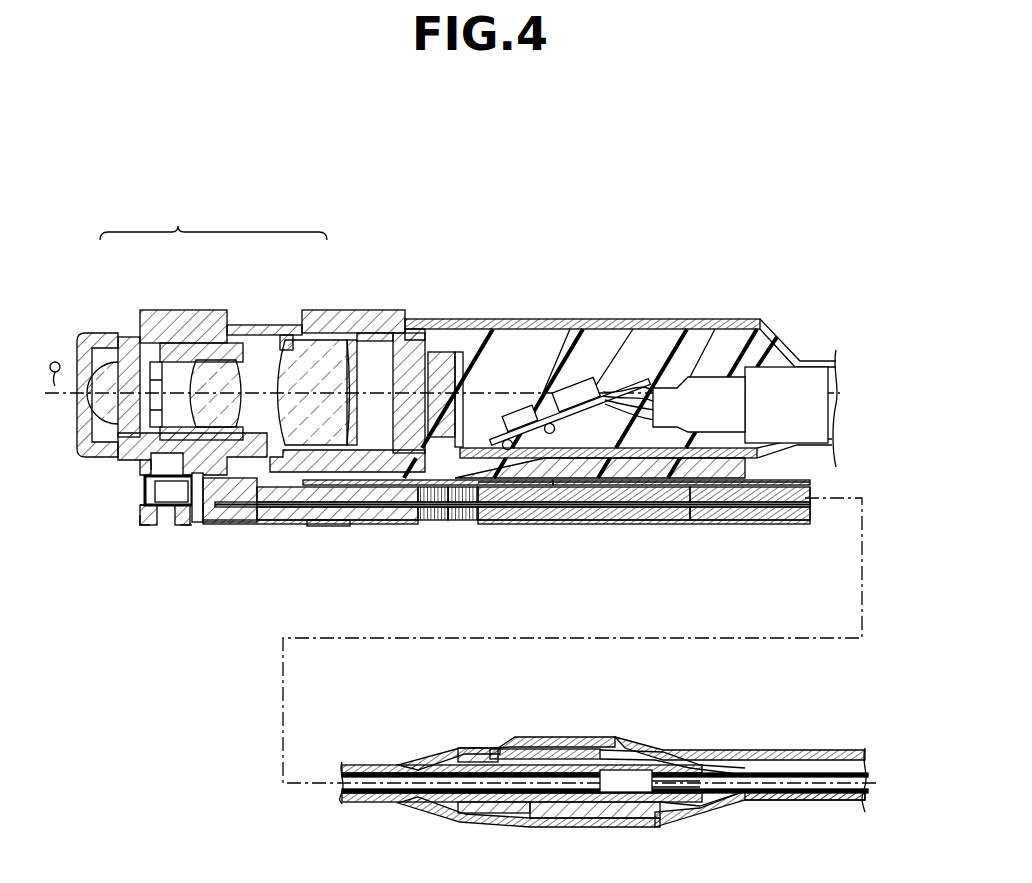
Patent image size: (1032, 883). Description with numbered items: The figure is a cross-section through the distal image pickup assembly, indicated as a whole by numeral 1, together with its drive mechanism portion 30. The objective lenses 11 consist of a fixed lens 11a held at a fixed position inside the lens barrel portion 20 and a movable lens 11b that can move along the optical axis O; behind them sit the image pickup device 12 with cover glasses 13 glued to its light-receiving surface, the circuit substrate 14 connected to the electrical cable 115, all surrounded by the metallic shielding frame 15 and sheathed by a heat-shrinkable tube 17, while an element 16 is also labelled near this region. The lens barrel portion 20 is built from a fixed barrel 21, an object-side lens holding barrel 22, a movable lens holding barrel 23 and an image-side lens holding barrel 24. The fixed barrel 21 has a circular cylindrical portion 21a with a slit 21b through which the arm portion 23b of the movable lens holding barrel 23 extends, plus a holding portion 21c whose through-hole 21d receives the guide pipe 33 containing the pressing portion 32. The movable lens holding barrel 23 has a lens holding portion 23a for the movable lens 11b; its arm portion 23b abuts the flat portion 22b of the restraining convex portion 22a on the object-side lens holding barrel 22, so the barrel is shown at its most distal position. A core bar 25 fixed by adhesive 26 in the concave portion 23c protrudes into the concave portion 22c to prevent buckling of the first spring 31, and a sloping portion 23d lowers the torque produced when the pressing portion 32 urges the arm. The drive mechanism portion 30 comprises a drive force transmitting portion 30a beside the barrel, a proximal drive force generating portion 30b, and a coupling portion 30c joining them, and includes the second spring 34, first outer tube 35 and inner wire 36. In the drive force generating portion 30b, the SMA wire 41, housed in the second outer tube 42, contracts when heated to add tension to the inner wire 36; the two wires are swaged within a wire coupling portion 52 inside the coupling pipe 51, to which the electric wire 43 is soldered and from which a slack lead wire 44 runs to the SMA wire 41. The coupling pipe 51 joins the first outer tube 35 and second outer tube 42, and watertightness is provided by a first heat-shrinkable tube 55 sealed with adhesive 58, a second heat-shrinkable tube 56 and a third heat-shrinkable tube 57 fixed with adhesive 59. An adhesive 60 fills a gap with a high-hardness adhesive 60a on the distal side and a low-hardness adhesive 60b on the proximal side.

The endoscope distal end portion 1 is at (268, 210).
The objective lenses 11 is at (213, 217).
The fixed lens 11a is at (130, 342).
The movable lens 11b is at (152, 358).
The image pickup device 12 is at (460, 319).
The cover glasses 13 is at (441, 320).
The circuit substrate 14 is at (543, 405).
The shielding frame 15 is at (594, 382).
The signal cable 16 is at (642, 385).
The heat-shrinkable tube 17 is at (778, 350).
The electrical cable 115 is at (822, 382).
The lens barrel portion 20 is at (380, 310).
The fixed barrel 21 is at (336, 326).
The circular cylindrical portion 21a is at (268, 336).
The slit 21b is at (265, 523).
The holding portion 21c is at (324, 526).
The through-hole 21d is at (348, 510).
The object-side lens holding barrel 22 is at (96, 334).
The restraining convex portion 22a is at (140, 524).
The flat portion 22b is at (150, 462).
The concave portion 22c is at (142, 508).
The movable lens holding barrel 23 is at (216, 320).
The lens holding portion 23a is at (138, 418).
The arm portion 23b is at (188, 526).
The concave portion 23c is at (197, 522).
The sloping portion 23d is at (203, 512).
The image-side lens holding barrel 24 is at (236, 346).
The core bar 25 is at (157, 525).
The adhesive 26 is at (172, 525).
The drive mechanism portion 30 is at (218, 692).
The drive force transmitting portion 30a is at (567, 527).
The drive force generating portion 30b is at (817, 763).
The coupling portion 30c is at (592, 758).
The first spring 31 is at (145, 490).
The pressing portion 32 is at (286, 521).
The guide pipe 33 is at (418, 522).
The second spring 34 is at (460, 521).
The first outer tube 35 is at (685, 525).
The inner wire 36 is at (793, 524).
The SMA wire 41 is at (868, 779).
The second outer tube 42 is at (762, 800).
The electric wire 43 is at (757, 760).
The lead wire 44 is at (670, 760).
The coupling pipe 51 is at (663, 752).
The wire coupling portion 52 is at (640, 773).
The first heat-shrinkable tube 55 is at (520, 738).
The second heat-shrinkable tube 56 is at (738, 525).
The third heat-shrinkable tube 57 is at (667, 822).
The adhesive 58 is at (460, 750).
The adhesive 59 is at (585, 822).
The adhesive 60 is at (800, 466).
The high-hardness adhesive 60a is at (513, 520).
The low-hardness adhesive 60b is at (625, 520).